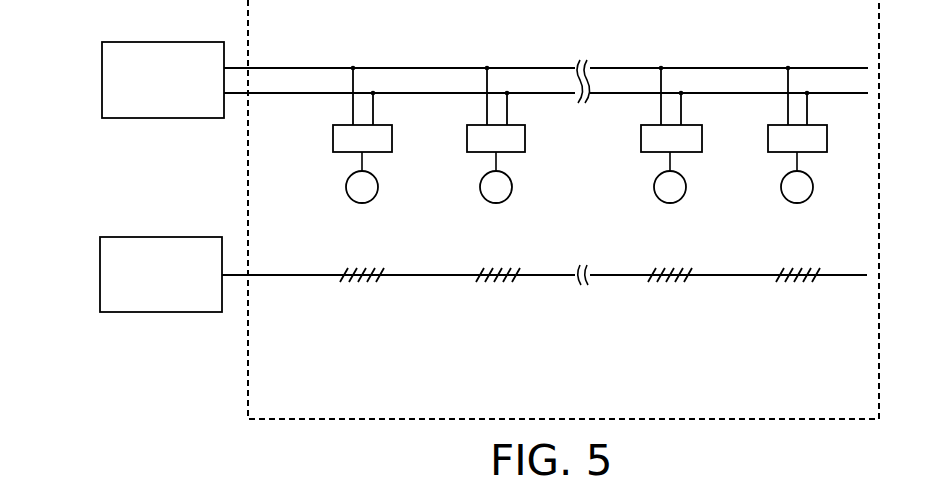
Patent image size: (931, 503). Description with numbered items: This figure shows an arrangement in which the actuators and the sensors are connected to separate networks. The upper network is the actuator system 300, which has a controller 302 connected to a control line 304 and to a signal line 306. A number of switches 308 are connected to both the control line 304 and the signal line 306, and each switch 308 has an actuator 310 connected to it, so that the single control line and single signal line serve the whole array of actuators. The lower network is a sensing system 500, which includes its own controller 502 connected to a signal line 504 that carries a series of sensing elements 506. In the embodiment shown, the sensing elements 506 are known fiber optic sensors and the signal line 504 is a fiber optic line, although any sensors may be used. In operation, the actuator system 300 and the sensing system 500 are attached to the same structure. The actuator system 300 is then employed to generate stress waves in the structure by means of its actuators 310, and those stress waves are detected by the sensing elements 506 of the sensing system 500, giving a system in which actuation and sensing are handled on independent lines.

The actuator system 300 is at (92, 78).
The controller 302 is at (163, 80).
The control line 304 is at (296, 96).
The signal line 306 is at (296, 65).
The switch 308 is at (526, 146).
The actuator 310 is at (373, 197).
The sensing system 500 is at (90, 274).
The controller 502 is at (161, 274).
The signal line 504 is at (289, 279).
The sensing element 506 is at (374, 297).